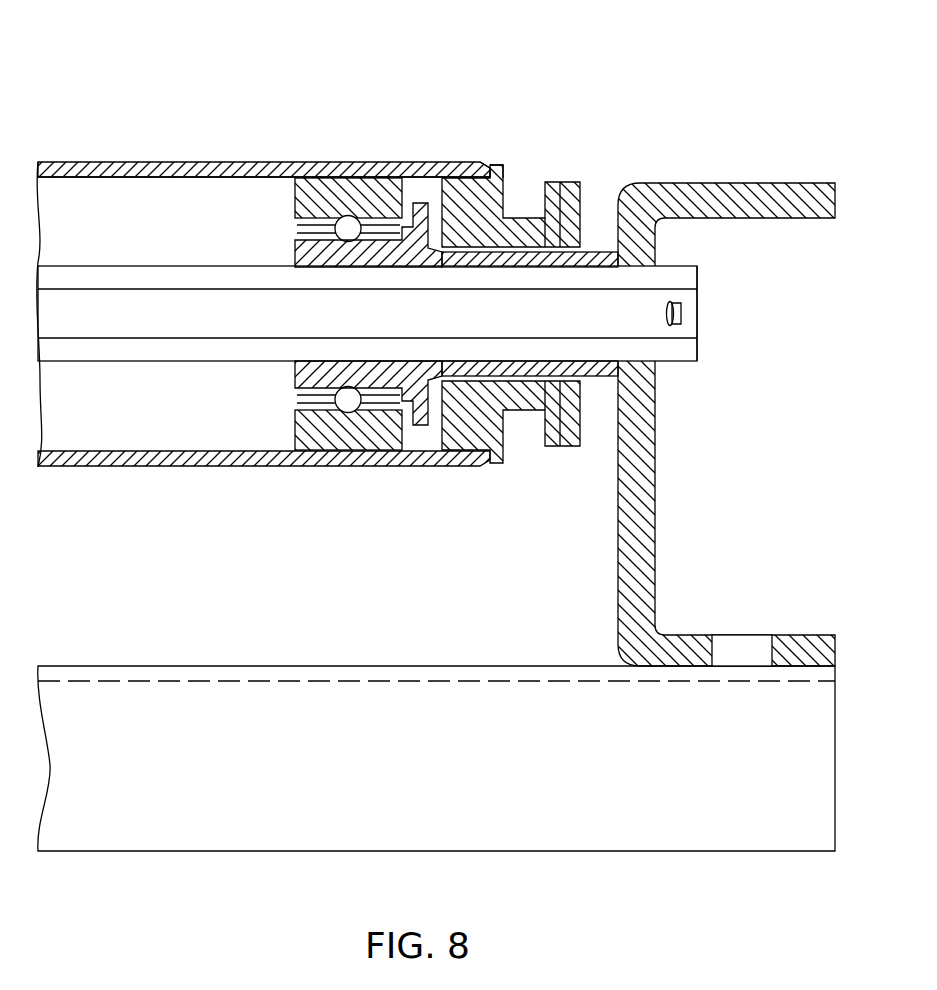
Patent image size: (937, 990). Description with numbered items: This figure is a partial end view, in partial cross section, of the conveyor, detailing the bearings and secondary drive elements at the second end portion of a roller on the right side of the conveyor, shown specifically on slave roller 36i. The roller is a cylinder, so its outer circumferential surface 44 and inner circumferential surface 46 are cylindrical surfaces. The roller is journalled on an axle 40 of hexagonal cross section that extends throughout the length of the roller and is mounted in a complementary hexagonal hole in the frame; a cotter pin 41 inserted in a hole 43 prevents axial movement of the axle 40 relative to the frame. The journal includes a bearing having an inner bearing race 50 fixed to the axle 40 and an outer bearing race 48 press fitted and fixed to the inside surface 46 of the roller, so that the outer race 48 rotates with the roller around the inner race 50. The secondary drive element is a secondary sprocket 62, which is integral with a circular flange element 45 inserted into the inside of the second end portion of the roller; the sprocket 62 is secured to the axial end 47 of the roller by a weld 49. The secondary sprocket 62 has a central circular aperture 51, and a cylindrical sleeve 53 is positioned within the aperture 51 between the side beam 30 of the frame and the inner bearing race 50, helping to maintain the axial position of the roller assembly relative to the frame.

The side beam 30 is at (672, 195).
The slave roller 36i is at (50, 160).
The axle 40 is at (622, 330).
The cotter pin 41 is at (697, 292).
The hole 43 is at (683, 313).
The outer circumferential surface 44 is at (118, 160).
The circular flange element 45 is at (483, 213).
The inner circumferential surface 46 is at (152, 177).
The axial end 47 is at (480, 165).
The outer bearing race 48 is at (318, 178).
The weld 49 is at (497, 170).
The inner bearing race 50 is at (295, 242).
The central circular aperture 51 is at (558, 230).
The cylindrical sleeve 53 is at (597, 253).
The secondary sprocket 62 is at (568, 427).